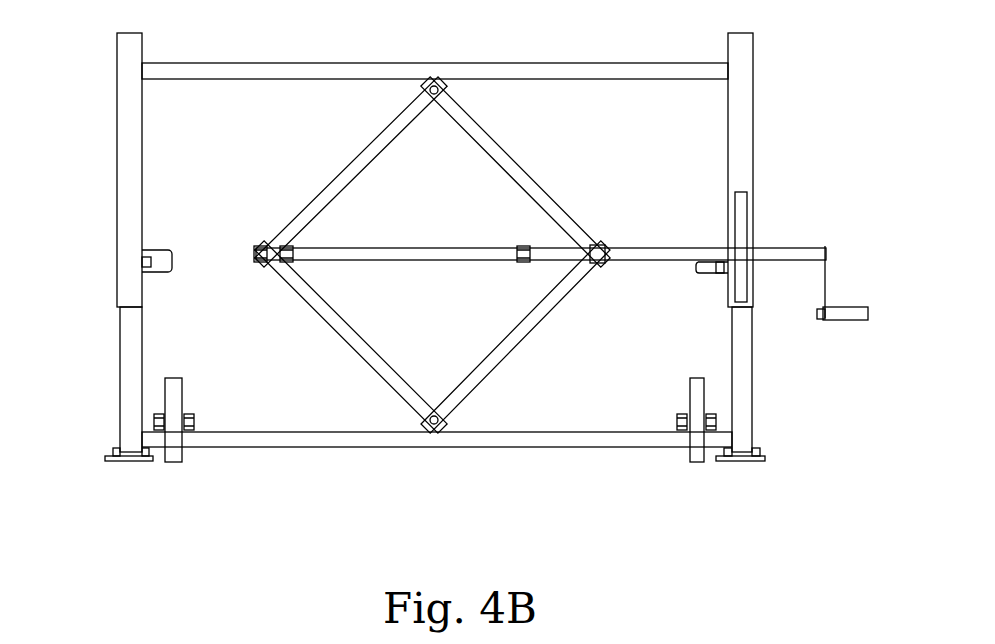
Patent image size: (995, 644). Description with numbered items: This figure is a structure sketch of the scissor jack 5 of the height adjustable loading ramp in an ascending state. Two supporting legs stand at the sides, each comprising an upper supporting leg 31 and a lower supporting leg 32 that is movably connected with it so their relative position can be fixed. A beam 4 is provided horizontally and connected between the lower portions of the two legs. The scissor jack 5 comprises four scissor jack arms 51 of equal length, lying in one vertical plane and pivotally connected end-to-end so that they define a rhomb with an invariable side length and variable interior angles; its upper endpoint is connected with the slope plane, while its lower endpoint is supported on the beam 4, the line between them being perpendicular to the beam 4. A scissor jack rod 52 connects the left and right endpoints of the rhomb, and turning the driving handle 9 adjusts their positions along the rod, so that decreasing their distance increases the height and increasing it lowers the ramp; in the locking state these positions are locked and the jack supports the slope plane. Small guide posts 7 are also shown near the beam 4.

The beam 4 is at (532, 447).
The scissor jack 5 is at (520, 220).
The guide post 7 is at (183, 395).
The driving handle 9 is at (836, 305).
The upper supporting leg 31 is at (117, 175).
The lower supporting leg 32 is at (118, 378).
The scissor jack arm 51 is at (342, 178).
The scissor jack rod 52 is at (553, 248).